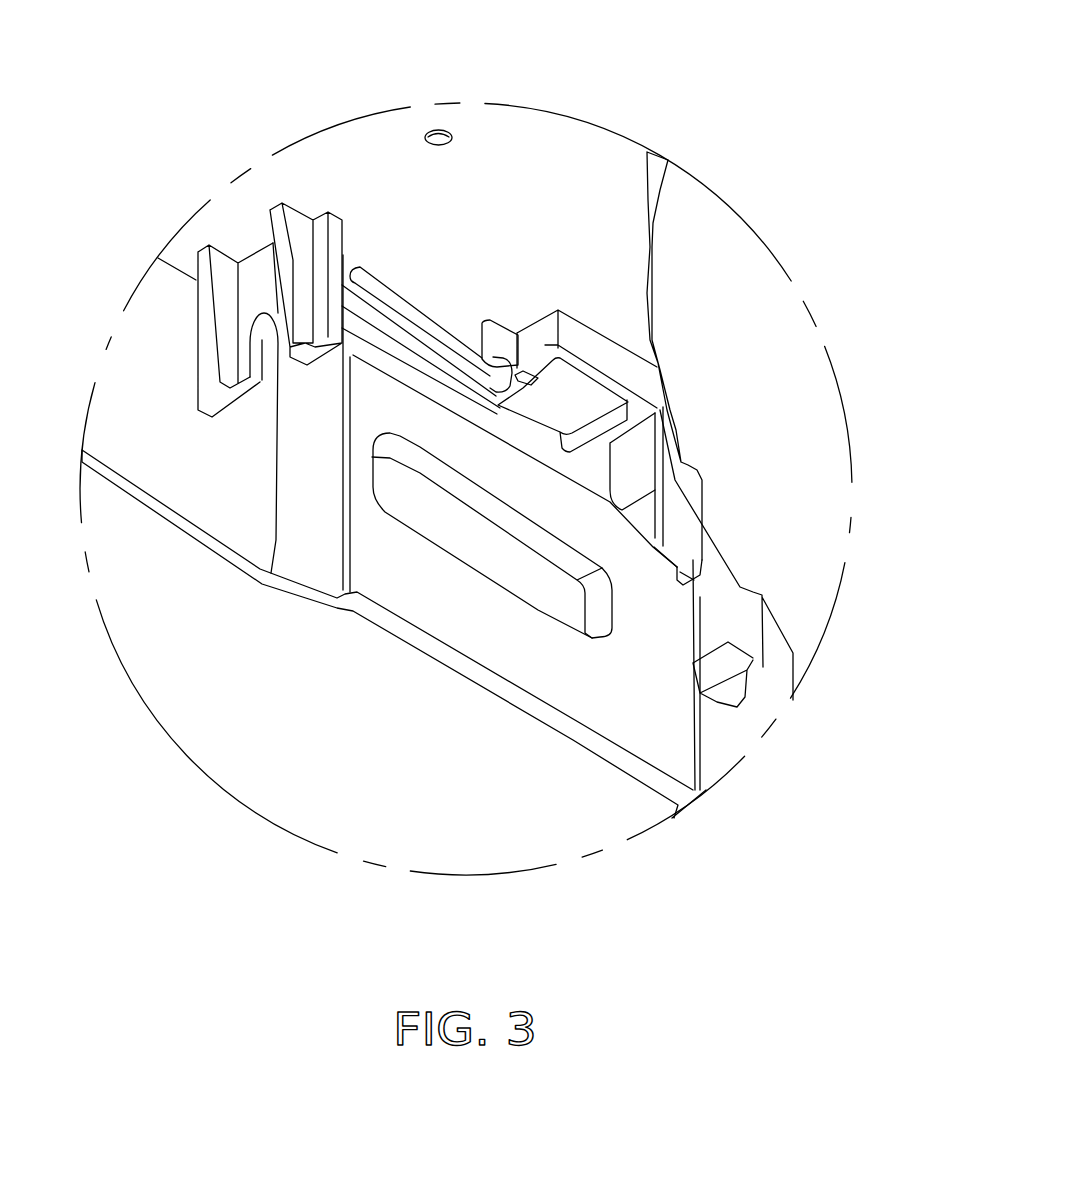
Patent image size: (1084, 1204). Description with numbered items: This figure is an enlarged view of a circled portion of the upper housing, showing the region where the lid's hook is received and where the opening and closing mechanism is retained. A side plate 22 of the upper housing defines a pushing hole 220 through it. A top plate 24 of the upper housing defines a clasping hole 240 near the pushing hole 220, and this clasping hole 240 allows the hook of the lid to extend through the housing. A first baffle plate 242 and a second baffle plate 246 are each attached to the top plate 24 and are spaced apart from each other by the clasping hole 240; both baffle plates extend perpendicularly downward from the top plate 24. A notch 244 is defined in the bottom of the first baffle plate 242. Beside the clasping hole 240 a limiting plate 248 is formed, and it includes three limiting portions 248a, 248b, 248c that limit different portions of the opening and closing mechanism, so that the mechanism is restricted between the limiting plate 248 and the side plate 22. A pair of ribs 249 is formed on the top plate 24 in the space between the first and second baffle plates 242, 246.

The side plate 22 is at (577, 672).
The top plate 24 is at (625, 190).
The pushing hole 220 is at (427, 520).
The clasping hole 240 is at (582, 393).
The first baffle plate 242 is at (257, 280).
The notch 244 is at (267, 357).
The second baffle plate 246 is at (727, 643).
The limiting plate 248 is at (683, 516).
The limiting portion 248a is at (492, 337).
The limiting portion 248b is at (627, 475).
The limiting portion 248c is at (700, 573).
The ribs 249 is at (363, 313).